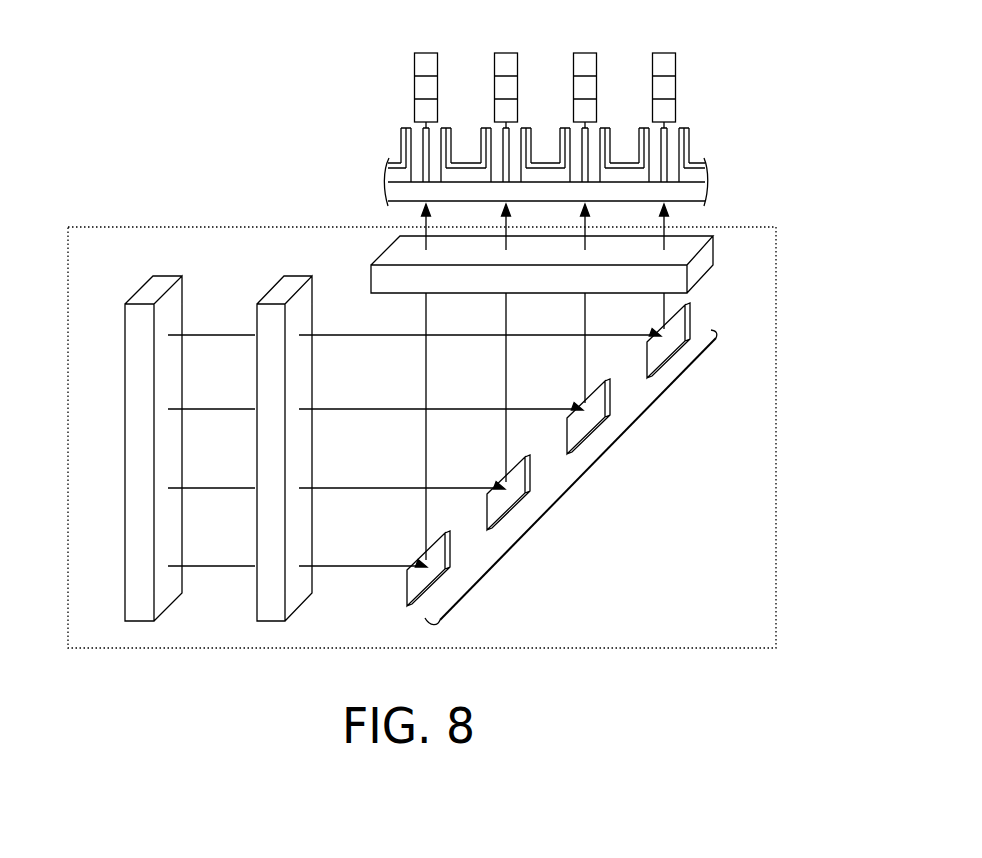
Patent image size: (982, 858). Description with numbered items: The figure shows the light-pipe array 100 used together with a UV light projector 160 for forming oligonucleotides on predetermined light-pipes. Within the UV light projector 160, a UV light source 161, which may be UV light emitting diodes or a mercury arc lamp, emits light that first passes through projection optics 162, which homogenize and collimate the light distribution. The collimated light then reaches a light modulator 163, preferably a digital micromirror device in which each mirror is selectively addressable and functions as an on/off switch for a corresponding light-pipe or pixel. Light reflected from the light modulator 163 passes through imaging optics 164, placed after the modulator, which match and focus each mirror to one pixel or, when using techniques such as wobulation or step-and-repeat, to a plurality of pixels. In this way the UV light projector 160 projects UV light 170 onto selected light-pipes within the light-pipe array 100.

The light-pipe array 100 is at (696, 208).
The UV light projector 160 is at (170, 222).
The UV light source 161 is at (178, 593).
The projection optics 162 is at (308, 593).
The light modulator 163 is at (578, 479).
The imaging optics 164 is at (714, 268).
The UV light 170 is at (421, 218).